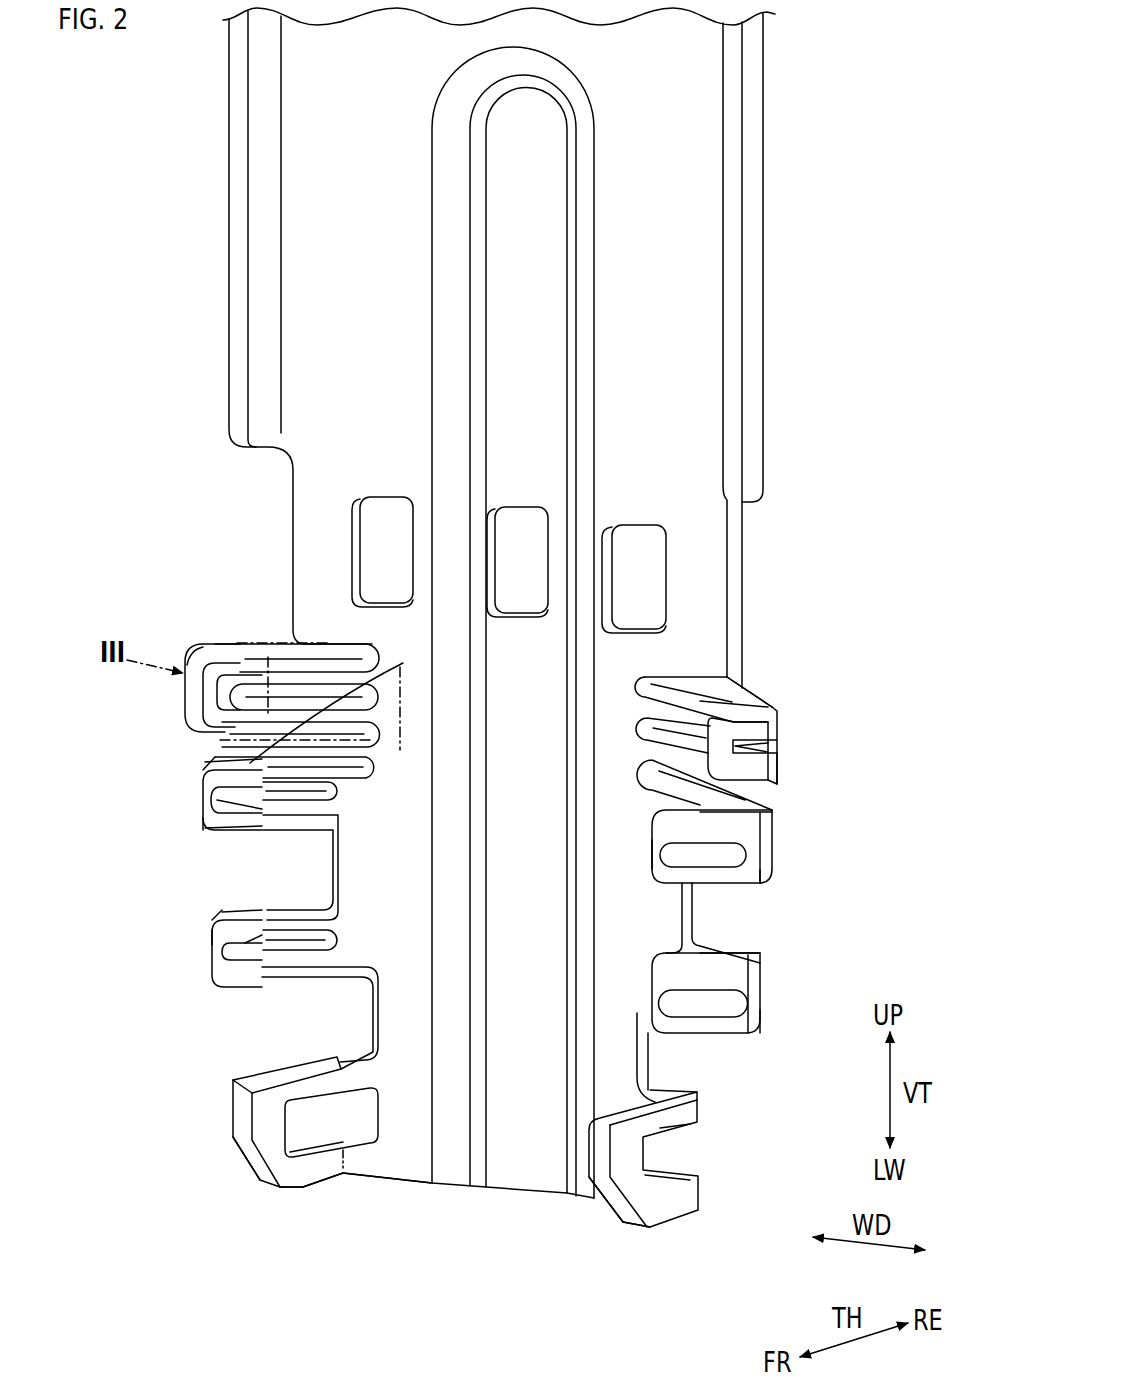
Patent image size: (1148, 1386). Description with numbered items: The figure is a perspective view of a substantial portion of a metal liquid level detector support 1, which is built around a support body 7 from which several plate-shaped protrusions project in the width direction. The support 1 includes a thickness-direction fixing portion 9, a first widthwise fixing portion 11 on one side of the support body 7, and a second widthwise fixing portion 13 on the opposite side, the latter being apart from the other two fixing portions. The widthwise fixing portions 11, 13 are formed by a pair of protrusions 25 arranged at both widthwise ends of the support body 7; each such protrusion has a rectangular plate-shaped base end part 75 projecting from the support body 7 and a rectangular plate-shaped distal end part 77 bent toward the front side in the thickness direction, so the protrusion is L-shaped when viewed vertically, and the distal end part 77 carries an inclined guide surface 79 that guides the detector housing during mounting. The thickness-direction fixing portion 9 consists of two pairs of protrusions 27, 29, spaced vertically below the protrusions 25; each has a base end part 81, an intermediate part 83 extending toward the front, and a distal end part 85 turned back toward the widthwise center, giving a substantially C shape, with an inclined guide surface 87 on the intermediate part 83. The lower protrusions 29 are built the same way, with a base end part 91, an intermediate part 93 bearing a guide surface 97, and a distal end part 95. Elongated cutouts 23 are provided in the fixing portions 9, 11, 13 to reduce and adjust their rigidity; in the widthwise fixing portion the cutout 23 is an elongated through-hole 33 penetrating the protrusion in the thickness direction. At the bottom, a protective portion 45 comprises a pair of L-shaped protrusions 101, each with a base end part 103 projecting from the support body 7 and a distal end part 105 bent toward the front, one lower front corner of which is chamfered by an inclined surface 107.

The liquid level detector support 1 is at (767, 202).
The support body 7 is at (417, 1167).
The thickness-direction fixing portion 9 is at (198, 827).
The first widthwise fixing portion 11 is at (218, 655).
The second widthwise fixing portion 13 is at (772, 702).
The cutout 23 is at (263, 683).
The protrusion (of widthwise fixing portions) 25 is at (180, 707).
The protrusion (upper pair of thickness-direction fixing portion) 27 is at (202, 783).
The protrusion (lower pair of thickness-direction fixing portion) 29 is at (217, 992).
The through-hole 33 is at (507, 652).
The protective portion 45 is at (300, 1187).
The base end part (of protrusion 25A) 75 is at (313, 643).
The distal end part (of protrusion 25A) 77 is at (203, 647).
The inclined surface (guide surface) 79 is at (233, 677).
The base end part (of protrusion 27A) 81 is at (653, 787).
The intermediate part (of protrusion 27A) 83 is at (217, 763).
The distal end part (of protrusion 27A) 85 is at (202, 820).
The inclined surface (guide surface) 87 is at (331, 695).
The base end part (of protrusion 29A) 91 is at (323, 908).
The intermediate part (of protrusion 29A) 93 is at (233, 912).
The distal end part (of protrusion 29A) 95 is at (238, 988).
The guide surface 97 is at (263, 927).
The protrusion (of protective portion) 101 is at (230, 1120).
The base end part (of protrusion 101A) 103 is at (362, 1180).
The distal end part (of protrusion 101A) 105 is at (277, 1097).
The inclined surface 107 is at (257, 1168).